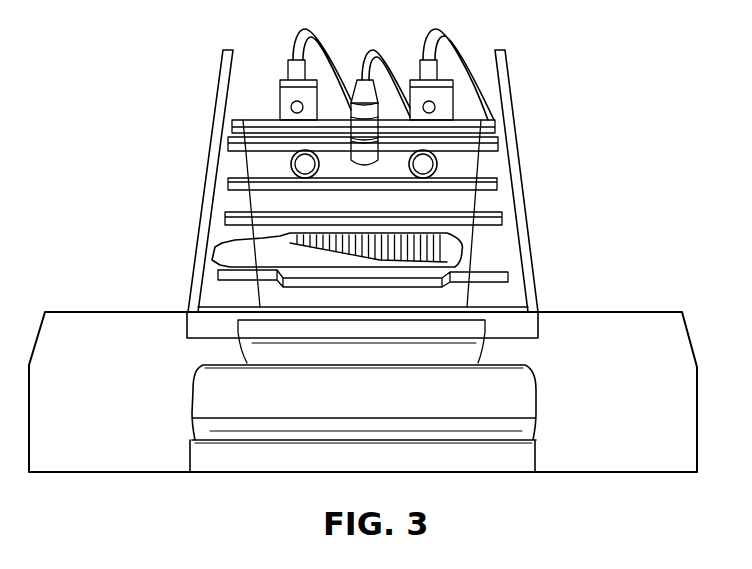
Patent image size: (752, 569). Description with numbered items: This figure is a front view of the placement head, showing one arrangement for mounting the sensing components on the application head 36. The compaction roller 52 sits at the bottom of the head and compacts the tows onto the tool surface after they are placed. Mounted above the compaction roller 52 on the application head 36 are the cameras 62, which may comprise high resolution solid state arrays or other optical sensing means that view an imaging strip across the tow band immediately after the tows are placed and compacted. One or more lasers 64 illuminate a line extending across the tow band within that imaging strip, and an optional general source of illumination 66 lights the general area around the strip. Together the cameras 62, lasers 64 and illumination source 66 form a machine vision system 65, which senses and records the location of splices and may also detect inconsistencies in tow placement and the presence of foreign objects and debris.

The application head 36 is at (172, 112).
The compaction roller 52 is at (212, 397).
The cameras 62 is at (300, 163).
The lasers 64 is at (291, 108).
The machine vision system 65 is at (536, 103).
The general source of illumination 66 is at (442, 246).